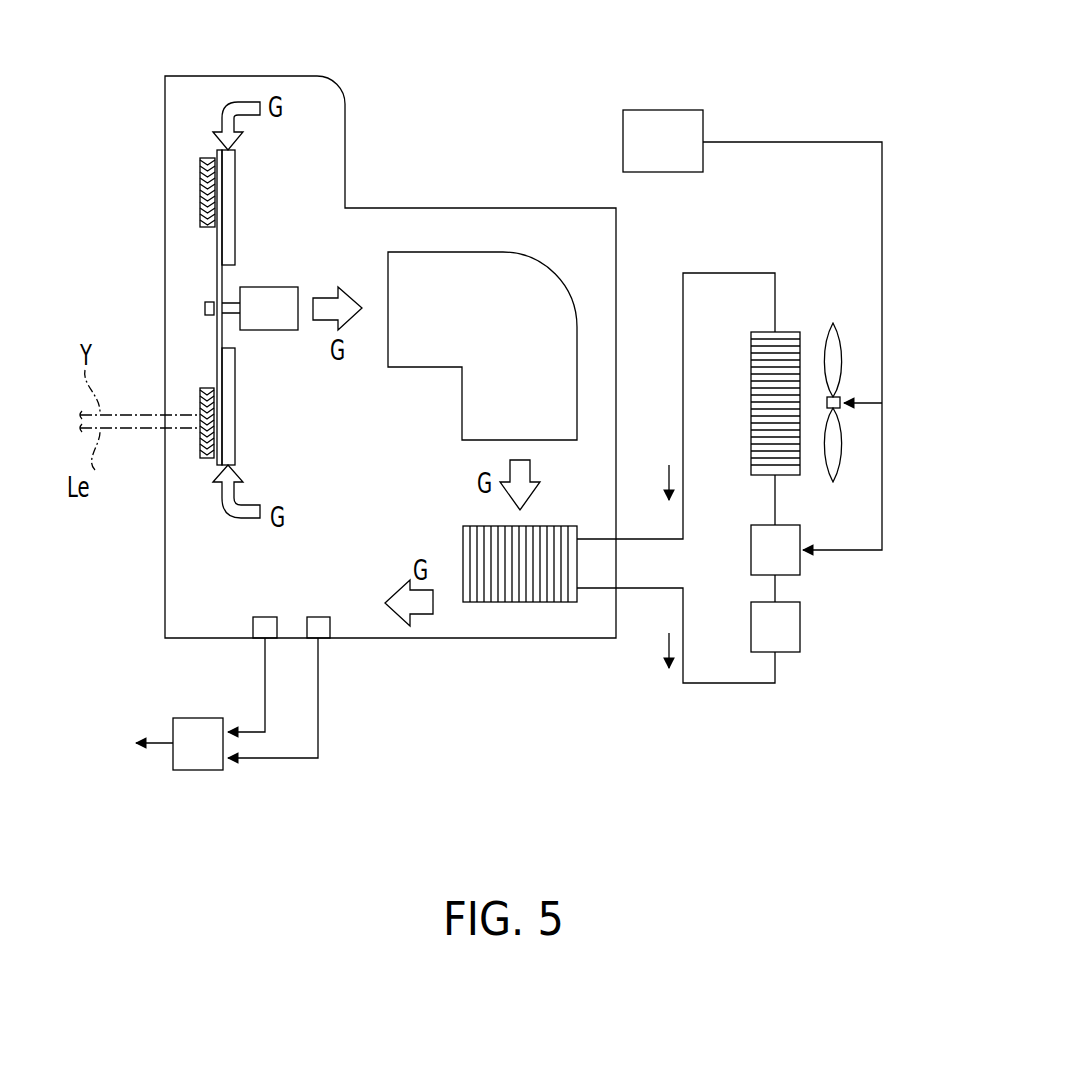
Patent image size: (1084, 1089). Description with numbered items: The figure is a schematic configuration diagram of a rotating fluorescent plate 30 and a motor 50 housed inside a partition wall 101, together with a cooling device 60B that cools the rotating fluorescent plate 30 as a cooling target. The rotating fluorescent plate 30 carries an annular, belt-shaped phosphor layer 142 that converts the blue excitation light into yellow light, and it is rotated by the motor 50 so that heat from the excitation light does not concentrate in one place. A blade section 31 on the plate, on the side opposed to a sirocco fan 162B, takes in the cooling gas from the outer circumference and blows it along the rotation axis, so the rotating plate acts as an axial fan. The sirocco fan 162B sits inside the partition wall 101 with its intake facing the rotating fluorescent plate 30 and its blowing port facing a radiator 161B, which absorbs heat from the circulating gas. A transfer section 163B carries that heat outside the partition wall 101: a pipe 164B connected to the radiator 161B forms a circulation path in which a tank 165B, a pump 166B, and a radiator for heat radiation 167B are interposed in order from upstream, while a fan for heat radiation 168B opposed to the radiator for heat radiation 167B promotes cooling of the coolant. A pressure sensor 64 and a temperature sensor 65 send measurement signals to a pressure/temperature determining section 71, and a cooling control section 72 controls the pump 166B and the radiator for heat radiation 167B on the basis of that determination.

The partition wall 101 is at (162, 612).
The cooling device 60B is at (381, 742).
The rotating fluorescent plate 30 is at (192, 326).
The blade section 31 is at (238, 416).
The phosphor layer 142 is at (197, 447).
The motor 50 is at (279, 287).
The sirocco fan 162B is at (469, 249).
The radiator 161B is at (535, 606).
The pipe 164B is at (717, 688).
The radiator for heat radiation 167B is at (796, 329).
The pump 166B is at (793, 558).
The tank 165B is at (793, 638).
The fan for heat radiation 168B is at (843, 319).
The cooling control section 72 is at (667, 110).
The transfer section 163B is at (808, 78).
The temperature sensor 65 is at (252, 630).
The pressure sensor 64 is at (330, 626).
The pressure/temperature determining section 71 is at (197, 762).